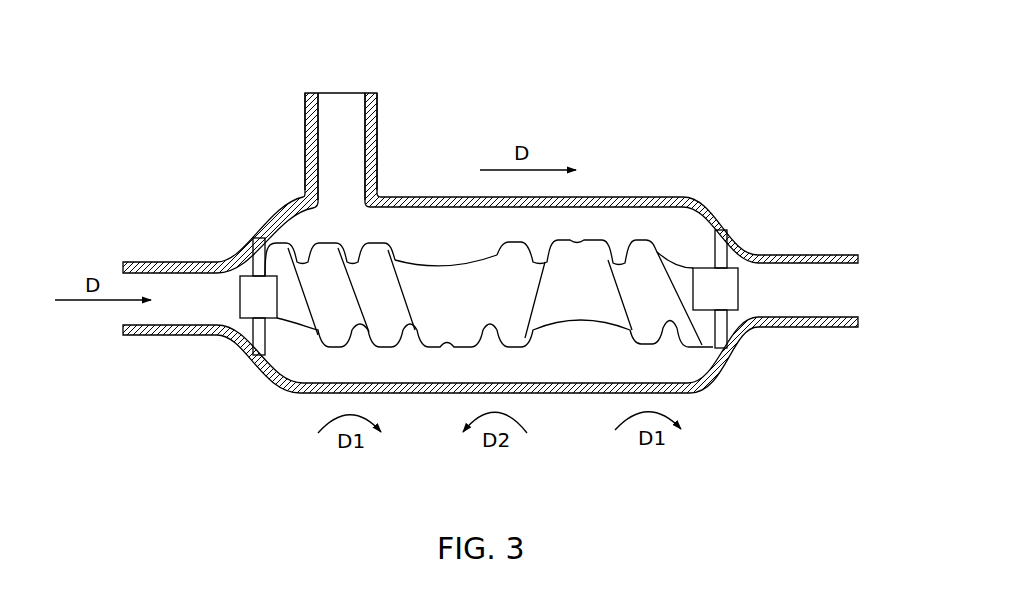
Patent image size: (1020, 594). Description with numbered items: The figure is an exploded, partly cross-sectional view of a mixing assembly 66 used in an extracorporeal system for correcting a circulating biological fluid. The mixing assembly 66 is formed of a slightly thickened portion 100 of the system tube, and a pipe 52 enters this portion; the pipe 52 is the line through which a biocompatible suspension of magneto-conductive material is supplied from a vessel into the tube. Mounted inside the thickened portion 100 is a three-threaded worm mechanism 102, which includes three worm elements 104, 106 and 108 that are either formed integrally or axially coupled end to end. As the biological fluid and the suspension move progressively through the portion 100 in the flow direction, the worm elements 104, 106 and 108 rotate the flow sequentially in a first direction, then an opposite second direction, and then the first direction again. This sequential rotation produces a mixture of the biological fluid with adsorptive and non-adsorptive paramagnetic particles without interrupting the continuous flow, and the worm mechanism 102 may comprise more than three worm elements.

The pipe 52 is at (373, 92).
The mixing assembly 66 is at (490, 259).
The thickened portion of the tube 100 is at (415, 198).
The three-threaded worm mechanism 102 is at (442, 357).
The worm element 104 is at (330, 303).
The worm element 106 is at (520, 295).
The worm element 108 is at (647, 293).